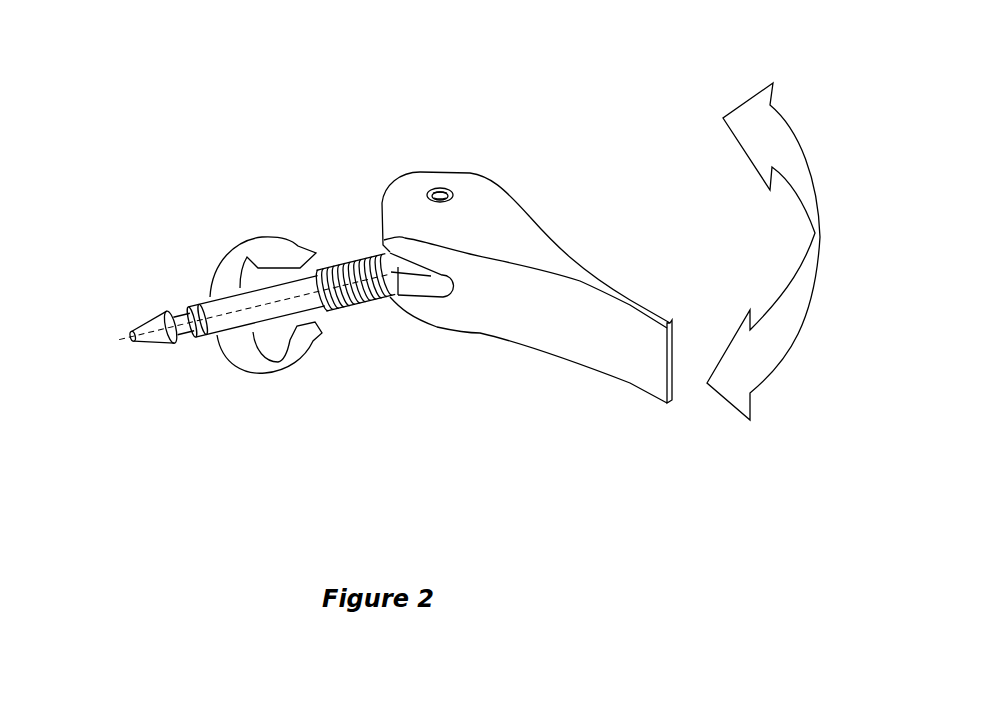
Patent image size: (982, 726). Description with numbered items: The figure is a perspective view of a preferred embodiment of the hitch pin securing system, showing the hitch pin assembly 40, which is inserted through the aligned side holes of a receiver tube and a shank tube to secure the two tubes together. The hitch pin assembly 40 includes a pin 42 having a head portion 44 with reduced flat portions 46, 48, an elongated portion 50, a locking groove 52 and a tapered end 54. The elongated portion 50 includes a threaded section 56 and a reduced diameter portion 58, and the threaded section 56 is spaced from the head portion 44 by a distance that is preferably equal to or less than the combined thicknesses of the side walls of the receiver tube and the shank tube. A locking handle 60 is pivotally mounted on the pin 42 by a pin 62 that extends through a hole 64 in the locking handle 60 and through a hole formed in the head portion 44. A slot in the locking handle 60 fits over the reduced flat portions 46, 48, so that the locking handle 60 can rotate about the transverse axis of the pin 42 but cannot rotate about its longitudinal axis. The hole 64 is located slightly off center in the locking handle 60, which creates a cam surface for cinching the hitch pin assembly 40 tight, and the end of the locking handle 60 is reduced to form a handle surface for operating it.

The hitch pin assembly 40 is at (517, 472).
The pin 42 is at (237, 385).
The head portion 44 is at (397, 267).
The reduced flat portion 46 is at (397, 285).
The reduced flat portion 48 is at (413, 282).
The elongated portion 50 is at (283, 310).
The locking groove 52 is at (175, 310).
The tapered end 54 is at (148, 352).
The threaded section 56 is at (338, 257).
The reduced diameter portion 58 is at (210, 300).
The locking handle 60 is at (555, 220).
The pin 62 is at (447, 193).
The hole 64 is at (423, 192).